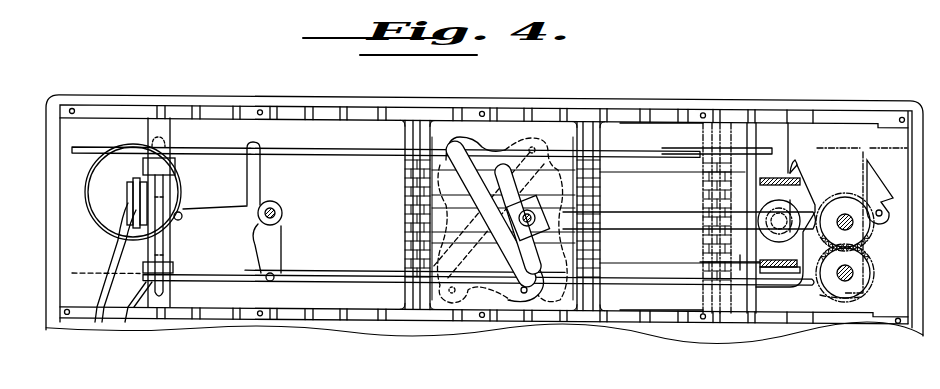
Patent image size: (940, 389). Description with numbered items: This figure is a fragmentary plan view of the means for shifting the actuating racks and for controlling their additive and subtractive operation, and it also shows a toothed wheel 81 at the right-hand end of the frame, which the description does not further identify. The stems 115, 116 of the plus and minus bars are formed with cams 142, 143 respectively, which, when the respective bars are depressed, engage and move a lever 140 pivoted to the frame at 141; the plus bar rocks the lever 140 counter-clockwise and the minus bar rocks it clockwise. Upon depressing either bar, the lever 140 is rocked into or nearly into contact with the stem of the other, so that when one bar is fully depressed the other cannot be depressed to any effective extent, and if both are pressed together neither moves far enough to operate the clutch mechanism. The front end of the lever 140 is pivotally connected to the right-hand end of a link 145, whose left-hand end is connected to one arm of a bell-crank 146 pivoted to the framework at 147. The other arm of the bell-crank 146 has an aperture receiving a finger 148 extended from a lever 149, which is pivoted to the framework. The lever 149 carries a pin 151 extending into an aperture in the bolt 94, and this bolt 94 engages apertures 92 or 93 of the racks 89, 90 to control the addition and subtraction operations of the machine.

The gear 81 is at (846, 215).
The rack 89 is at (350, 152).
The rack 90 is at (323, 280).
The aperture 92 is at (174, 150).
The aperture 93 is at (170, 274).
The bolt 94 is at (162, 245).
The stem 115 is at (703, 260).
The stem 116 is at (772, 175).
The lever 140 is at (797, 192).
The pivot 141 is at (770, 198).
The cam 142 is at (776, 259).
The cam 143 is at (794, 153).
The link 145 is at (303, 270).
The bell-crank 146 is at (270, 238).
The pivot 147 is at (275, 205).
The finger 148 is at (188, 204).
The lever 149 is at (127, 233).
The pin 151 is at (175, 186).